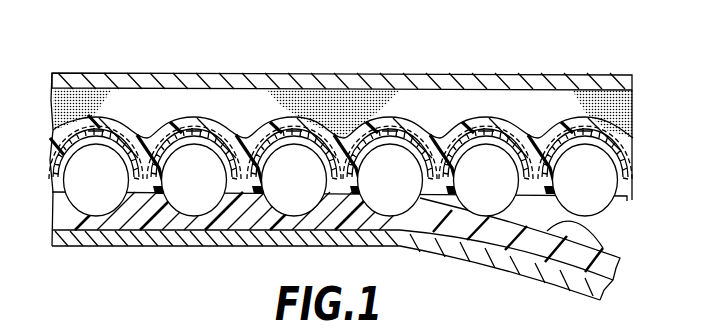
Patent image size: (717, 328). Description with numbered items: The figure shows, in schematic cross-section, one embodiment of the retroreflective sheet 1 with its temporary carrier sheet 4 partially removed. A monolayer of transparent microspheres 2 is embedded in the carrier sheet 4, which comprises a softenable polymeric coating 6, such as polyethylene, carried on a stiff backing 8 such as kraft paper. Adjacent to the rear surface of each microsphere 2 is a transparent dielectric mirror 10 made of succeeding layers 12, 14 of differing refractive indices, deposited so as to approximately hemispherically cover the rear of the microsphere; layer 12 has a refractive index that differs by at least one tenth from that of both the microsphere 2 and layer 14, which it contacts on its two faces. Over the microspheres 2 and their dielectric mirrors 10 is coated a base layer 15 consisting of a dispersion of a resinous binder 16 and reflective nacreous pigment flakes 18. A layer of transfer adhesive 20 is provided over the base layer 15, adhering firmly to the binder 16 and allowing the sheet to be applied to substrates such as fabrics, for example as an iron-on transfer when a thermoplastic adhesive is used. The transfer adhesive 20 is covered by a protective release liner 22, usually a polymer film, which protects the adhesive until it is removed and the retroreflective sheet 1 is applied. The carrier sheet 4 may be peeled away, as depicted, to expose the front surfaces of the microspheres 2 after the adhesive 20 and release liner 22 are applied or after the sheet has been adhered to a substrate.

The retroreflective sheet 1 is at (68, 46).
The transparent microspheres 2 is at (185, 200).
The temporary carrier sheet 4 is at (43, 193).
The polymeric coating 6 is at (70, 217).
The stiff backing 8 is at (110, 235).
The transparent dielectric mirror 10 is at (200, 118).
The first dielectric mirror layer 12 is at (107, 150).
The second dielectric mirror layer 14 is at (103, 133).
The base layer 15 is at (647, 135).
The resinous binder 16 is at (531, 142).
The reflective nacreous pigment flakes 18 is at (570, 130).
The transfer adhesive 20 is at (333, 100).
The protective release liner 22 is at (397, 81).